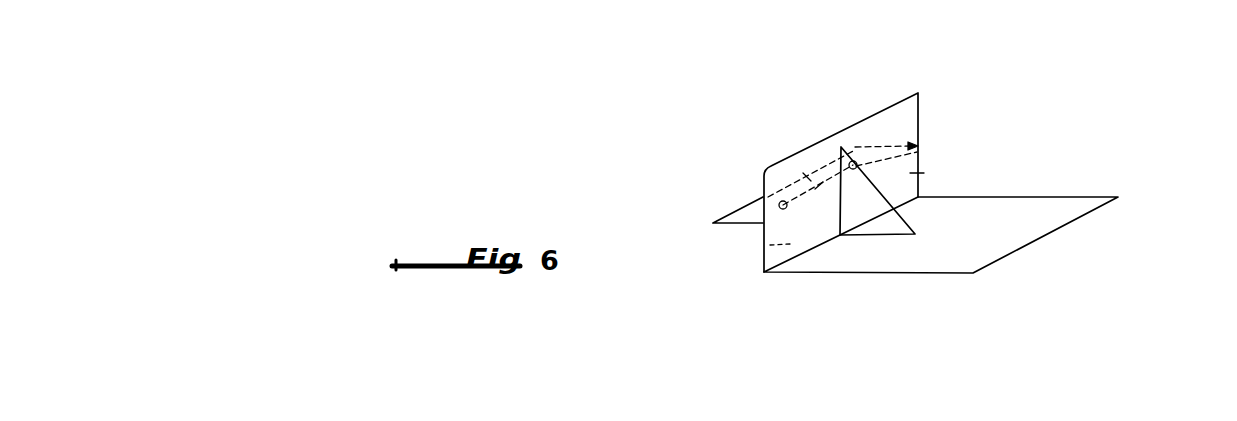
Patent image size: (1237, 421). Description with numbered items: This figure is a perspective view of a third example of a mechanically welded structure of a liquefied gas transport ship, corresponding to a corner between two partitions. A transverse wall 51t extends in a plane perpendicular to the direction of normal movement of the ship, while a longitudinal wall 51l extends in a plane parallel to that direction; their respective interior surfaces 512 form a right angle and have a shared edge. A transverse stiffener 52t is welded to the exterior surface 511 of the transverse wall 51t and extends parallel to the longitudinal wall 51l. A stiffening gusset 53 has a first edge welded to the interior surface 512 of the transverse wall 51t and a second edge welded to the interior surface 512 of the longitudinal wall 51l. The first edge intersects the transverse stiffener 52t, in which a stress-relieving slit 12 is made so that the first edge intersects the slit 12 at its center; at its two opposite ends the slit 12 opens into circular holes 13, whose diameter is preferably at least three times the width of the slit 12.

The stress-relieving slit 12 is at (820, 185).
The circular holes 13 is at (851, 162).
The transverse wall 51t is at (890, 120).
The longitudinal wall 51l is at (1030, 222).
The exterior surface 511 is at (762, 247).
The interior surface 512 is at (918, 172).
The transverse stiffener 52t is at (732, 217).
The stiffening gusset 53 is at (875, 223).